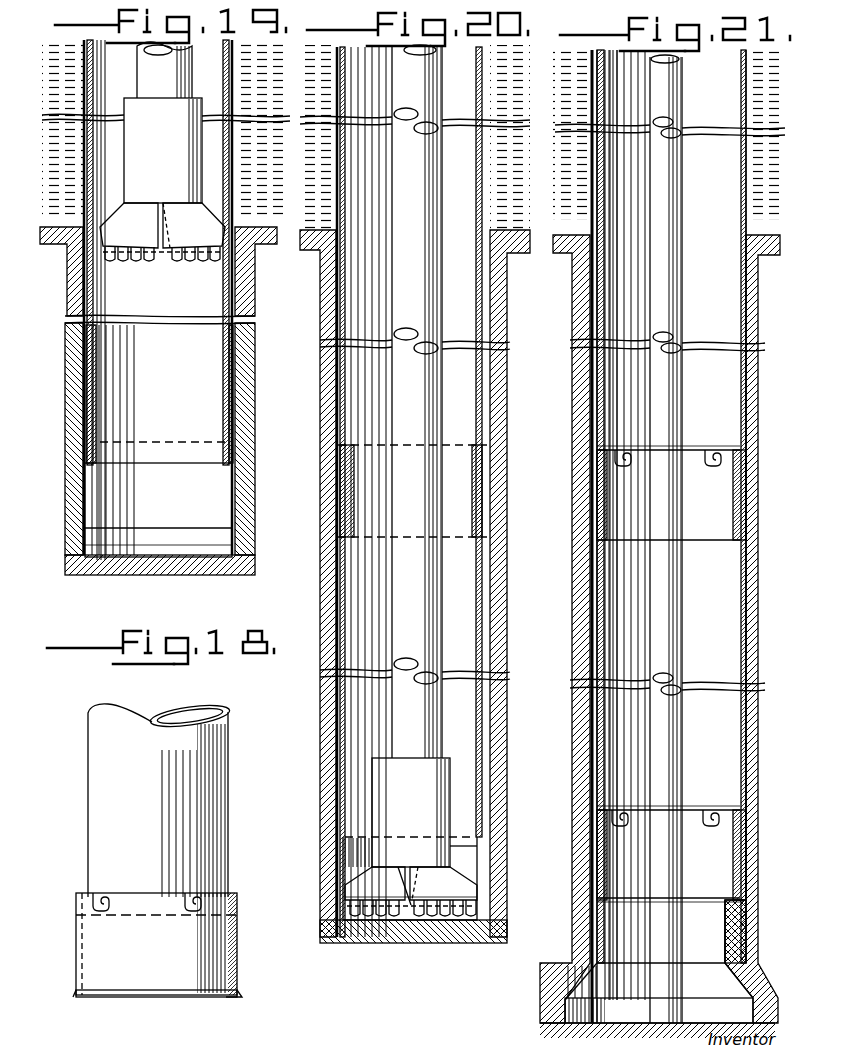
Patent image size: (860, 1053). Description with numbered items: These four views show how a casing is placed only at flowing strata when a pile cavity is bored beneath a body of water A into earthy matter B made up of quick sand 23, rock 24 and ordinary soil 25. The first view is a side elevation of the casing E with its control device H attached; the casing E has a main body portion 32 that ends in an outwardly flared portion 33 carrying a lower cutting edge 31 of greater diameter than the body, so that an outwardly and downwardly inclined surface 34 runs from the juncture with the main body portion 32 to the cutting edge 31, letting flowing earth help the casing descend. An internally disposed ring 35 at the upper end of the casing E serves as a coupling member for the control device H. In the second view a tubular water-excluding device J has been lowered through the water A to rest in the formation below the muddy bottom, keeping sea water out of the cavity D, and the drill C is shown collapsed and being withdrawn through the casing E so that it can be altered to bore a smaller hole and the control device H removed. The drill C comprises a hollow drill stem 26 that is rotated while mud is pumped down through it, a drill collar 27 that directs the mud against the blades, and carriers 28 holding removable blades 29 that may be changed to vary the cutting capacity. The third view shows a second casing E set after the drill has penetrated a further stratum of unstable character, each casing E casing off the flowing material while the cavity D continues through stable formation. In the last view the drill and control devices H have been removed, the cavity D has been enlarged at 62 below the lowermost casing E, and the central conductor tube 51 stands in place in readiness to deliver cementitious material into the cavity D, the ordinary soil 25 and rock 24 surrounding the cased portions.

In FIG. 19, the body of water A is at (48, 80).
In FIG. 20, the body of water A is at (312, 86).
In FIG. 21, the body of water A is at (566, 100).
In FIG. 19, the water-excluding device J is at (50, 162).
In FIG. 20, the water-excluding device J is at (318, 169).
In FIG. 21, the water-excluding device J is at (585, 171).
In FIG. 19, the earthy matter B is at (67, 363).
In FIG. 20, the earthy matter B is at (323, 395).
In FIG. 21, the earthy matter B is at (758, 284).
In FIG. 19, the cavity-forming apparatus C is at (178, 151).
In FIG. 20, the cavity-forming apparatus C is at (426, 813).
In FIG. 19, the cavity D is at (222, 545).
In FIG. 20, the cavity D is at (462, 853).
In FIG. 21, the cavity D is at (713, 928).
In FIG. 19, the casing E is at (248, 490).
In FIG. 18, the casing E is at (95, 947).
In FIG. 20, the casing E is at (500, 860).
In FIG. 21, the casing E is at (753, 487).
In FIG. 19, the control device H is at (234, 352).
In FIG. 18, the control device H is at (97, 838).
In FIG. 19, the quick sand 23 is at (65, 492).
In FIG. 20, the quick sand 23 is at (325, 513).
In FIG. 21, the quick sand 23 is at (753, 524).
In FIG. 21, the rock 24 is at (575, 1033).
In FIG. 19, the ordinary soil 25 is at (67, 284).
In FIG. 20, the ordinary soil 25 is at (326, 283).
In FIG. 21, the ordinary soil 25 is at (752, 396).
In FIG. 19, the hollow drill stem 26 is at (164, 70).
In FIG. 20, the hollow drill stem 26 is at (417, 401).
In FIG. 19, the drill collar 27 is at (213, 90).
In FIG. 20, the drill collar 27 is at (449, 763).
In FIG. 19, the carriers 28 is at (162, 225).
In FIG. 20, the carriers 28 is at (411, 886).
In FIG. 19, the removable blades 29 is at (148, 257).
In FIG. 20, the removable blades 29 is at (445, 922).
In FIG. 19, the lower cutting edge 31 is at (238, 530).
In FIG. 18, the lower cutting edge 31 is at (82, 1005).
In FIG. 20, the lower cutting edge 31 is at (490, 901).
In FIG. 21, the lower cutting edge 31 is at (749, 908).
In FIG. 18, the main body portion 32 is at (93, 975).
In FIG. 18, the outwardly flared portion 33 is at (168, 997).
In FIG. 18, the inclined surface 34 is at (247, 992).
In FIG. 19, the internally disposed ring 35 is at (232, 450).
In FIG. 21, the tubing string 51 is at (673, 402).
In FIG. 21, the enlarged cavity portion 62 is at (723, 985).